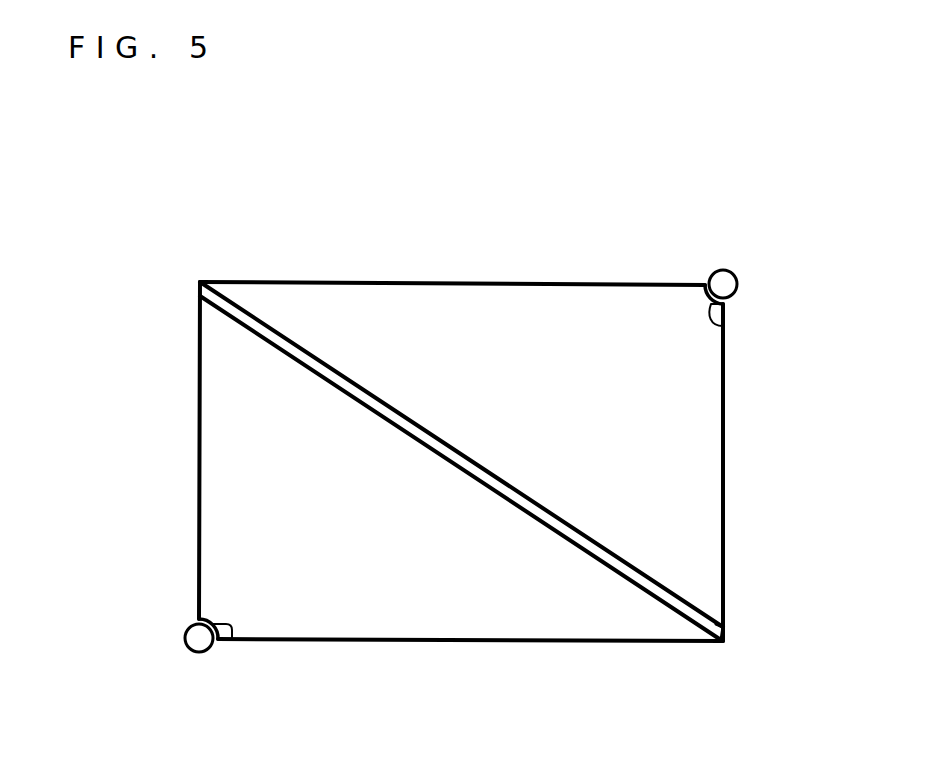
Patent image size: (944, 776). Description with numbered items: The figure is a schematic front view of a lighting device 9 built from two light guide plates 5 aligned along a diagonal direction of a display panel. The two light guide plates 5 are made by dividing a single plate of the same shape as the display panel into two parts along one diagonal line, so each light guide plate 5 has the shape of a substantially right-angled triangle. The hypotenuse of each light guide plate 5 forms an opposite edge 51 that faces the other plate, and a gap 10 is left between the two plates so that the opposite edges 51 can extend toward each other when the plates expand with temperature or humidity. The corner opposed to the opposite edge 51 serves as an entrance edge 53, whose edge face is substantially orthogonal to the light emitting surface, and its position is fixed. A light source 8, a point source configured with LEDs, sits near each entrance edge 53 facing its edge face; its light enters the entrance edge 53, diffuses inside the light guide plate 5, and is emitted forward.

The light guide plate 5 is at (422, 283).
The light source 8 is at (727, 270).
The lighting device 9 is at (594, 161).
The gap 10 is at (713, 630).
The opposite edge 51 is at (670, 588).
The entrance edge 53 is at (723, 325).